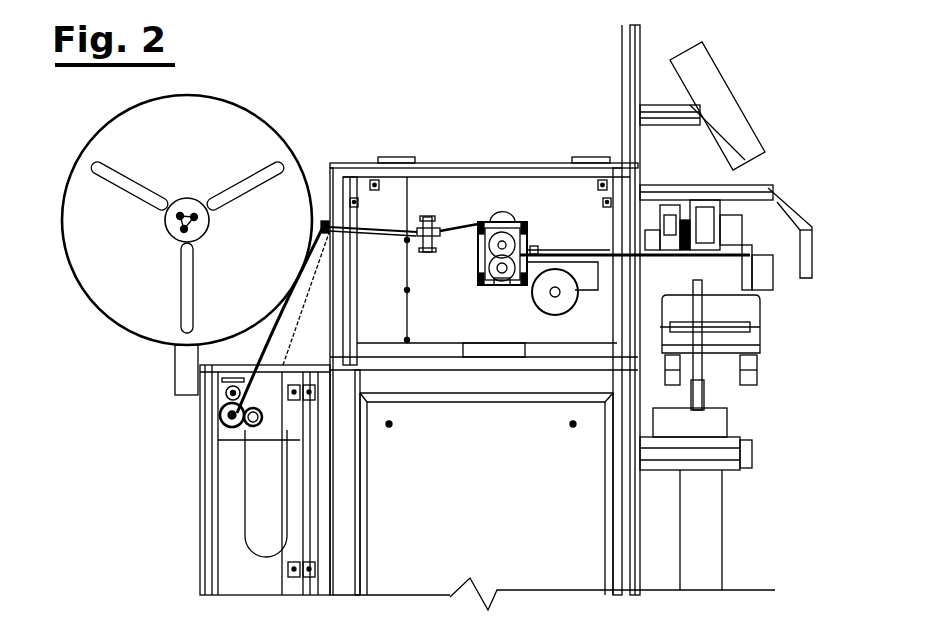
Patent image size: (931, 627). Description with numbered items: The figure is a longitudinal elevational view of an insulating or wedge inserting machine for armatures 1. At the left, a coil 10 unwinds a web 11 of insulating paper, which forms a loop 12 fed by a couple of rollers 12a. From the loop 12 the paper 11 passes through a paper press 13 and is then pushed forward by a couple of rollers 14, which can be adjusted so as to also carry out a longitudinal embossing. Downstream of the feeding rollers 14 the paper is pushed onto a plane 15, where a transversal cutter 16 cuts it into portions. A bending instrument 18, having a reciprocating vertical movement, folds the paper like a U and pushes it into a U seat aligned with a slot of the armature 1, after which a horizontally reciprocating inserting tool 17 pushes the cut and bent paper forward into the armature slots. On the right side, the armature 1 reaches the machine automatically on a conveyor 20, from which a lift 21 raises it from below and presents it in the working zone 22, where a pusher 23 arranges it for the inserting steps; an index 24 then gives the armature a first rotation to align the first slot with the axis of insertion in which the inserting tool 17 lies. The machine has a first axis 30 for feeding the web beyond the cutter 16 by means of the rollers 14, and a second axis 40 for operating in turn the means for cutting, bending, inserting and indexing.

The armature 1 is at (740, 332).
The coil 10 is at (160, 280).
The web of insulating paper 11 is at (389, 230).
The loop 12 is at (245, 508).
The couple of rollers 12a is at (215, 422).
The paper press 13 is at (437, 226).
The couple of rollers 14 is at (527, 230).
The plane 15 is at (565, 252).
The transversal cutter 16 is at (665, 228).
The inserting tool 17 is at (585, 258).
The bending instrument 18 is at (715, 212).
The conveyor 20 is at (758, 352).
The lift 21 is at (700, 355).
The working zone 22 is at (762, 232).
The pusher 23 is at (752, 285).
The index 24 is at (705, 205).
The first axis 30 is at (500, 275).
The second axis 40 is at (555, 295).